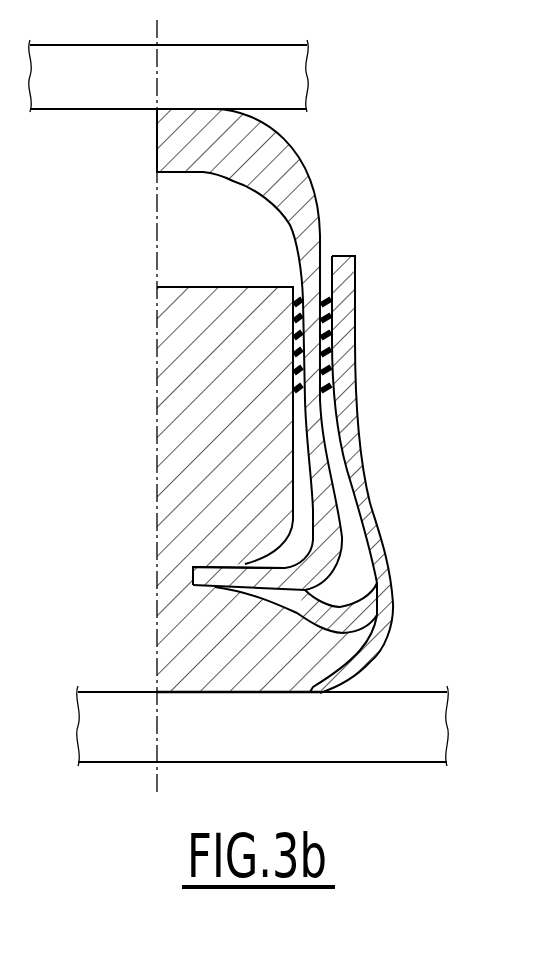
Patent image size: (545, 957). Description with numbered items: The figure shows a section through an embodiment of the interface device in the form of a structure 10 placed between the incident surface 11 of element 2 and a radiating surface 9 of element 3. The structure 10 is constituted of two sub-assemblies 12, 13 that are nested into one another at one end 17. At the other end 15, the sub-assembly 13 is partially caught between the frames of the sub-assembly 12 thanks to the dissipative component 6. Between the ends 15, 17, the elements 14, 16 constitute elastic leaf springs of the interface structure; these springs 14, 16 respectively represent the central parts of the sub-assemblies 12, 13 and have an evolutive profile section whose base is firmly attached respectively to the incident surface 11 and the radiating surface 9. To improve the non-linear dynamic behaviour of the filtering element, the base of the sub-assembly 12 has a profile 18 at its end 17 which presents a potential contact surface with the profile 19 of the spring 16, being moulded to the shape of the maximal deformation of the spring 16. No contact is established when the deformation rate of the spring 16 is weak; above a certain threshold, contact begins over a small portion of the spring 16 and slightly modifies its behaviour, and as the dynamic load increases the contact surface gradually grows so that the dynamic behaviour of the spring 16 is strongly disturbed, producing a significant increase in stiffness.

The element 2 is at (103, 92).
The element 3 is at (390, 740).
The dissipative component 6 is at (338, 336).
The radiating surface 9 is at (197, 695).
The structure 10 is at (398, 236).
The incident surface 11 is at (192, 107).
The sub-assembly 12 is at (303, 665).
The sub-assembly 13 is at (290, 186).
The elastic leaf spring 14 is at (379, 603).
The end 15 is at (359, 362).
The elastic leaf spring 16 is at (372, 588).
The end 17 is at (203, 566).
The profile 18 is at (277, 608).
The profile 19 is at (252, 564).